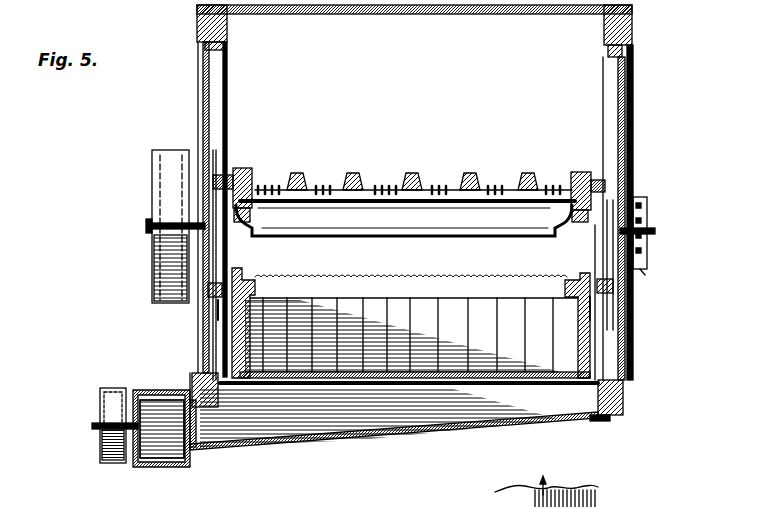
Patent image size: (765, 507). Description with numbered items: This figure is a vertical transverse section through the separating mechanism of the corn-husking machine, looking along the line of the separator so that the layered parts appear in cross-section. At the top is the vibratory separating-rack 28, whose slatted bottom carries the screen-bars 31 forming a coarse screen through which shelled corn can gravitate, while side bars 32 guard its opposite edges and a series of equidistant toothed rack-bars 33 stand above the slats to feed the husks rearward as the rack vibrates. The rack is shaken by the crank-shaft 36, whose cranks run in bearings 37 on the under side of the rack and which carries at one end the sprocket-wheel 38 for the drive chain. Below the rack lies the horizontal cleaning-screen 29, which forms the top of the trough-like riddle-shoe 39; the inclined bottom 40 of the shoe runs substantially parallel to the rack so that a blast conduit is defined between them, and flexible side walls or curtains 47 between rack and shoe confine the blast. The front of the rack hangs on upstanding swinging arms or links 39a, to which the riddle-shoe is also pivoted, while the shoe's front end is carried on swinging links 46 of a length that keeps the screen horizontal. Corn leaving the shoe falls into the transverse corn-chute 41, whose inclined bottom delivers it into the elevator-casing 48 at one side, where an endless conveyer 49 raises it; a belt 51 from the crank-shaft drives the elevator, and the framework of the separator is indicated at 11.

The housing 11 is at (193, 384).
The separating-rack 28 is at (407, 203).
The cleaning-screen 29 is at (428, 271).
The screen-bars 31 is at (266, 186).
The side bars 32 is at (243, 167).
The toothed rack-bars 33 is at (302, 174).
The crank-shaft 36 is at (346, 232).
The bearings 37 is at (244, 223).
The sprocket-wheel 38 is at (648, 212).
The riddle-shoe 39 is at (411, 323).
The swinging arms or links 39a is at (220, 316).
The inclined bottom 40 is at (405, 335).
The corn-chute 41 is at (366, 426).
The swinging links 46 is at (208, 290).
The flexible side walls or curtains 47 is at (230, 252).
The elevator-casing 48 is at (160, 468).
The endless conveyer 49 is at (150, 412).
The belt 51 is at (176, 151).